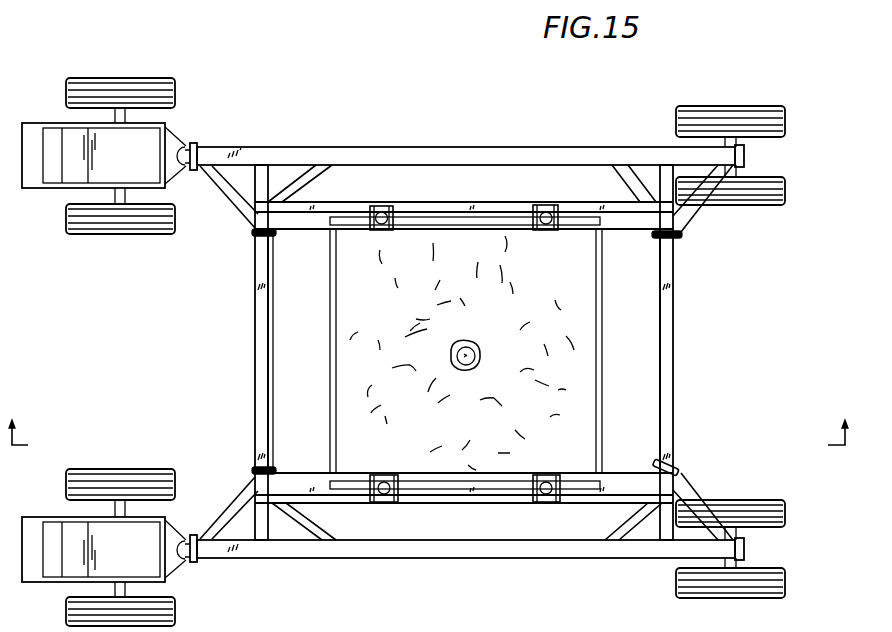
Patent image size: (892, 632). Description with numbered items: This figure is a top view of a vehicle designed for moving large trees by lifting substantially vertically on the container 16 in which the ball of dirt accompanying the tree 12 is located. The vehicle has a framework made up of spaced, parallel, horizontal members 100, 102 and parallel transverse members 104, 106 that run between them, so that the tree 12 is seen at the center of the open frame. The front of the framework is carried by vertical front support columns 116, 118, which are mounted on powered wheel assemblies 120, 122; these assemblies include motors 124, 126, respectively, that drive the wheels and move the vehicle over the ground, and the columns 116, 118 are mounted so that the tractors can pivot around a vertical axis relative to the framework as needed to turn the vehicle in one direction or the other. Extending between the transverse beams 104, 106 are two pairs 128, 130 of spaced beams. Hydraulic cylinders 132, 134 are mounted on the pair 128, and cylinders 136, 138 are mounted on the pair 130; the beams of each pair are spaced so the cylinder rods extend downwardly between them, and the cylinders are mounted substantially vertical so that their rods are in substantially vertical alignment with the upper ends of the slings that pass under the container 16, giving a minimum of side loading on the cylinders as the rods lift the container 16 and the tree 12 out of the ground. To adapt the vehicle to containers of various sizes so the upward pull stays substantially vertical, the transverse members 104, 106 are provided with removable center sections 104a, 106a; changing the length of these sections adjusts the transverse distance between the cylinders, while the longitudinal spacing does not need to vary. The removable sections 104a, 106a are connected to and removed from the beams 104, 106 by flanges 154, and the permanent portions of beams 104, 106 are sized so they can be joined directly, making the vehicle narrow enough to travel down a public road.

The tree 12 is at (484, 355).
The container 16 is at (429, 423).
The horizontal member 100 is at (470, 146).
The horizontal member 102 is at (492, 559).
The transverse member 104 is at (253, 348).
The removable center section 104a is at (255, 300).
The transverse member 106 is at (676, 352).
The removable center section 106a is at (676, 285).
The front support column 116 is at (184, 144).
The front support column 118 is at (183, 562).
The powered wheel assembly 120 is at (53, 210).
The powered wheel assembly 122 is at (57, 502).
The motor 124 is at (136, 164).
The motor 126 is at (140, 560).
The pair of spaced beams 128 is at (456, 200).
The pair of spaced beams 130 is at (461, 509).
The hydraulic cylinder 132 is at (382, 236).
The hydraulic cylinder 134 is at (548, 236).
The hydraulic cylinder 136 is at (385, 471).
The hydraulic cylinder 138 is at (547, 471).
The flanges 154 is at (253, 233).